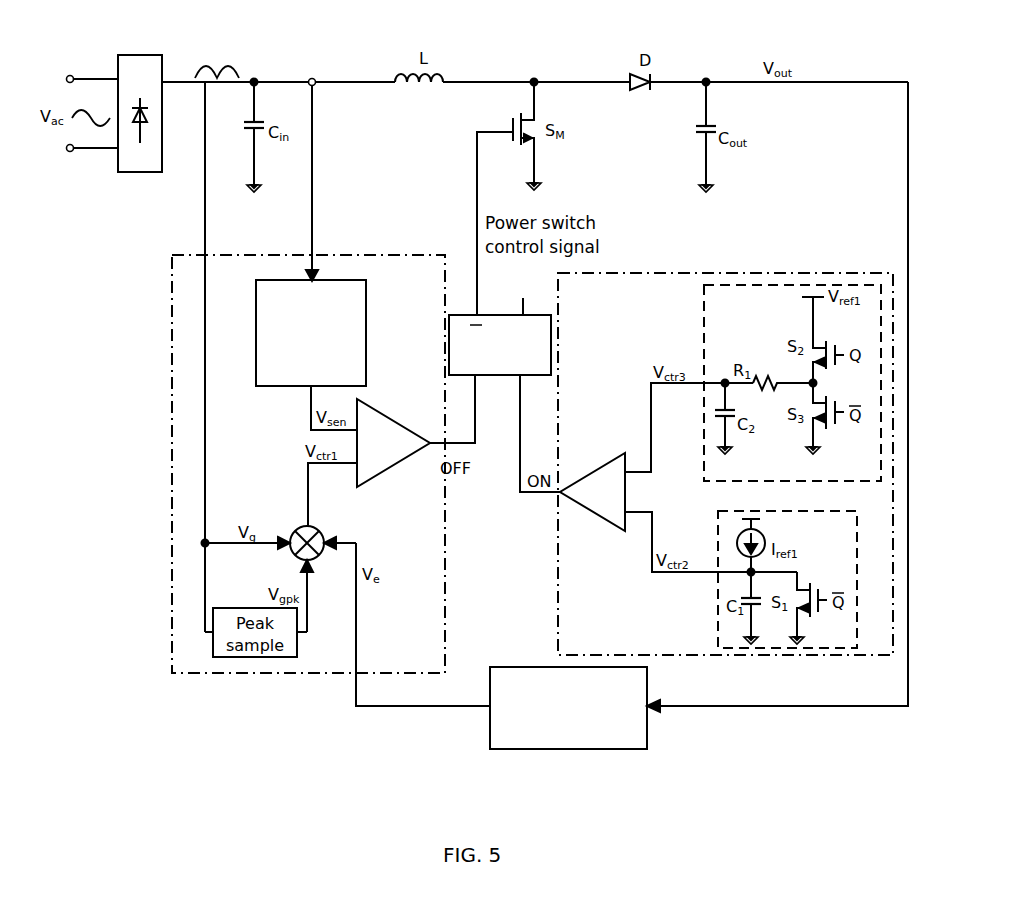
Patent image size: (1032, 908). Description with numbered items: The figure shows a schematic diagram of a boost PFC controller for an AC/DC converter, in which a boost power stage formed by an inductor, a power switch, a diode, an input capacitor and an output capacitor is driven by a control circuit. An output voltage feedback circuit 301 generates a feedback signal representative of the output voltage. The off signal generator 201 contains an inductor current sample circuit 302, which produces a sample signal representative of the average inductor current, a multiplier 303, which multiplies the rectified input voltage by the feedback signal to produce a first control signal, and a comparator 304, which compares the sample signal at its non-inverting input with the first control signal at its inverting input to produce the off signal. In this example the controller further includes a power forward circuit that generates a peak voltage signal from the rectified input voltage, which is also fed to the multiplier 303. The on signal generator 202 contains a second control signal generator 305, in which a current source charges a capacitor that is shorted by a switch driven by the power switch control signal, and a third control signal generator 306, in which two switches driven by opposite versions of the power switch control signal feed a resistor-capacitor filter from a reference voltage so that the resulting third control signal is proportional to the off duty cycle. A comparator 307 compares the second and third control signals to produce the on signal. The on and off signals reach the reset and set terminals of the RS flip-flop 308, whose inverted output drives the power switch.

The off signal generator 201 is at (427, 668).
The on signal generator 202 is at (593, 648).
The output voltage feedback circuit 301 is at (552, 742).
The inductor current sample circuit 302 is at (363, 380).
The multiplier 303 is at (318, 530).
The comparator 304 is at (406, 455).
The second control signal generator 305 is at (850, 539).
The third control signal generator 306 is at (742, 313).
The comparator 307 is at (608, 503).
The RS flip-flop 308 is at (516, 359).